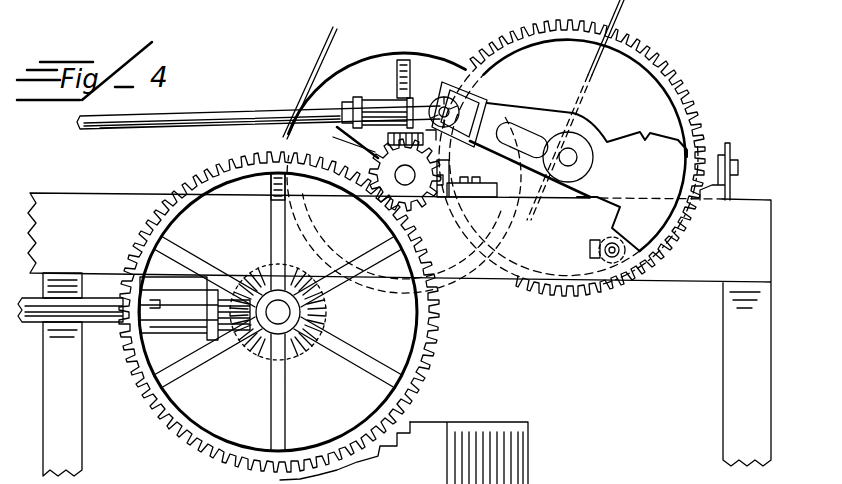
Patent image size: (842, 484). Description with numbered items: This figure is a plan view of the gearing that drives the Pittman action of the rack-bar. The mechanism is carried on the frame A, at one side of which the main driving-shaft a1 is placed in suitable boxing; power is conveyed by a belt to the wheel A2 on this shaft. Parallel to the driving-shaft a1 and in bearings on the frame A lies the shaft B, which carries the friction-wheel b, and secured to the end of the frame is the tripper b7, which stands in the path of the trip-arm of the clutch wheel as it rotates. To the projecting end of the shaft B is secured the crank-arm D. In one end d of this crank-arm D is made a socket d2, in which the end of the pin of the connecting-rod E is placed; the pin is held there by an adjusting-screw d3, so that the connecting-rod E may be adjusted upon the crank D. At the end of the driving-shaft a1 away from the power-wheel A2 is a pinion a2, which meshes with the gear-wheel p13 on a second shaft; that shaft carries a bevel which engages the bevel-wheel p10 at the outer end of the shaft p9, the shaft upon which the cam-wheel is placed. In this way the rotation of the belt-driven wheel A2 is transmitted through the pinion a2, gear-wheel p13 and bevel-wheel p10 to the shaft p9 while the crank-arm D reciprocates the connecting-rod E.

The wheel A2 is at (420, 41).
The frame A is at (298, 453).
The connecting-rod E is at (236, 109).
The end of crank-arm d is at (477, 93).
The socket d2 is at (497, 100).
The adjusting-screw d3 is at (476, 178).
The main driving-shaft a1 is at (412, 149).
The pinion a2 is at (405, 175).
The crank-arm D is at (572, 148).
The shaft B is at (576, 150).
The tripper b7 is at (729, 171).
The gear-wheel p13 is at (279, 312).
The friction-wheel b is at (289, 312).
The bevel-wheel p10 is at (240, 348).
The shaft p9 is at (110, 325).